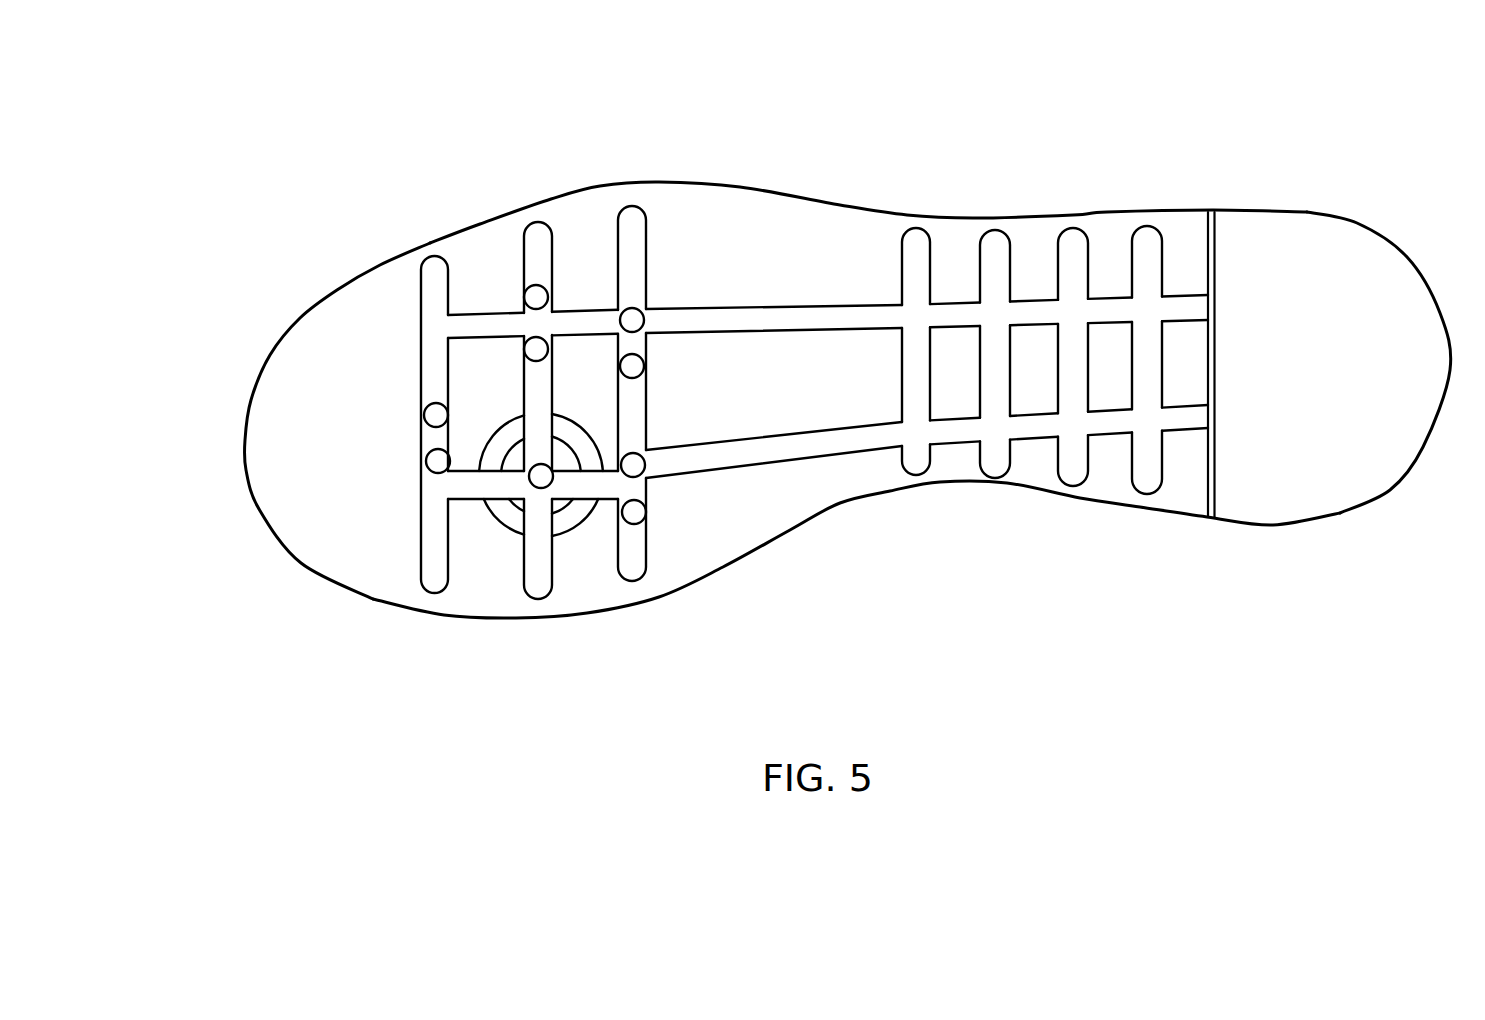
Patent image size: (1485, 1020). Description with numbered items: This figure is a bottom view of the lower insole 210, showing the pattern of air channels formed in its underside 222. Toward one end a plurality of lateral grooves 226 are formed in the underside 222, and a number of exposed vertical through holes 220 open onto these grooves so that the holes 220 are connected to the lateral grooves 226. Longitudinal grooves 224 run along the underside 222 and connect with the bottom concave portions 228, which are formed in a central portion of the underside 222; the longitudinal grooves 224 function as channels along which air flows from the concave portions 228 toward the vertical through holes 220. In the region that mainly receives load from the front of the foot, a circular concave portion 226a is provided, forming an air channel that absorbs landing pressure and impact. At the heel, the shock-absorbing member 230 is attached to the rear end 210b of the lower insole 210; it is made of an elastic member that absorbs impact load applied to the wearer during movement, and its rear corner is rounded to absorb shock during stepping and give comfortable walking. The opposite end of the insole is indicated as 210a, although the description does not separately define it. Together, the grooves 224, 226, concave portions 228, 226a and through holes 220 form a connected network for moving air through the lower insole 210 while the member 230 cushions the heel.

The lower insole 210 is at (803, 405).
The heel portion of sole 210a is at (236, 484).
The rear end 210b is at (1403, 523).
The vertical through holes 220 is at (434, 414).
The underside 222 is at (740, 560).
The longitudinal grooves 224 is at (766, 317).
The lateral grooves 226 is at (435, 520).
The circular concave portion 226a is at (496, 539).
The bottom concave portions 228 is at (1073, 247).
The shock-absorbing member 230 is at (1337, 252).